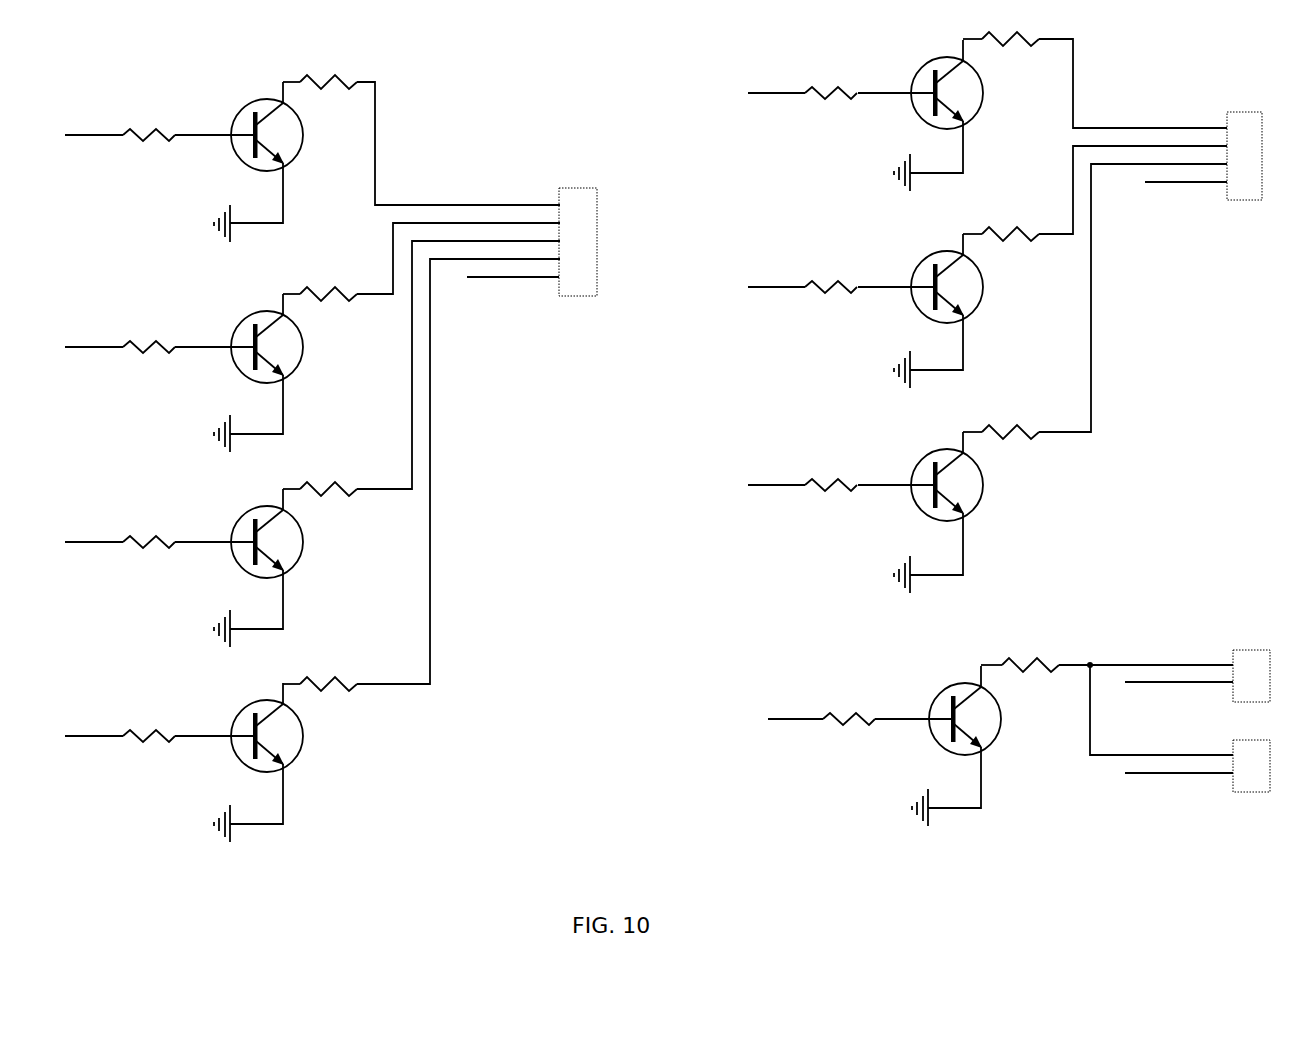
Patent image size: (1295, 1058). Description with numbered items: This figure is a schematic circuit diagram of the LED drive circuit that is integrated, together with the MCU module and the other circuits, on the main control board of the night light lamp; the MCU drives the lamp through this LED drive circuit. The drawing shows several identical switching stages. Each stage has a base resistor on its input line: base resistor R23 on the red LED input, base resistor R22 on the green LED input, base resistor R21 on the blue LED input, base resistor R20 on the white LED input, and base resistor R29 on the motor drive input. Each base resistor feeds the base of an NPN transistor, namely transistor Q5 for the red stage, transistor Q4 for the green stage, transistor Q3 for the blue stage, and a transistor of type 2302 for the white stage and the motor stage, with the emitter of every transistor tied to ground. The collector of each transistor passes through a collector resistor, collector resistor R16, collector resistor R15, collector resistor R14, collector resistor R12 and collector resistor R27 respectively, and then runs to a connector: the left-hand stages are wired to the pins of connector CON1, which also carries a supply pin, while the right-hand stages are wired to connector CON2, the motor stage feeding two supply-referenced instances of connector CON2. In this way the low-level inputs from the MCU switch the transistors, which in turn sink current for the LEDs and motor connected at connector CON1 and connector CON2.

The 1K base resistor (LED-R / LEDR) R23 is at (499, 106).
The 1K base resistor (LED-G / LEDG) R22 is at (499, 309).
The 1K base resistor (LED-B / LEDB) R21 is at (499, 506).
The 1K base resistor (LED-W) R20 is at (159, 728).
The 1K base resistor (MD) R29 is at (860, 712).
The 10R collector resistor R16 is at (755, 111).
The 10R collector resistor R15 is at (755, 223).
The 10R collector resistor R14 is at (755, 330).
The 10R collector resistor R12 is at (421, 475).
The 10R collector resistor R27 is at (1107, 699).
The NPN transistor Y1 (red LED driver) Q5 is at (613, 141).
The NPN transistor Y1 (green LED driver) Q4 is at (613, 343).
The NPN transistor Y1 (blue LED driver) Q3 is at (613, 539).
The NPN transistor Y1 2302 is at (630, 754).
The 5-pin connector CON1 is at (532, 233).
The connector CON2 is at (1197, 440).